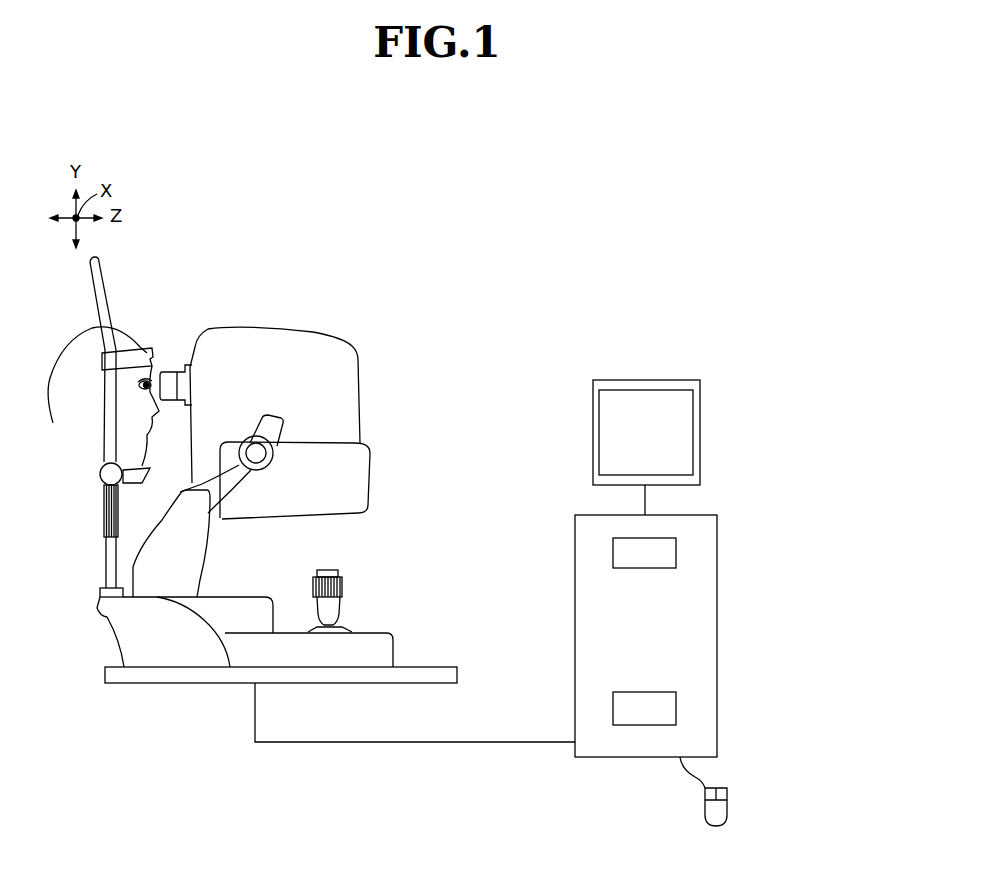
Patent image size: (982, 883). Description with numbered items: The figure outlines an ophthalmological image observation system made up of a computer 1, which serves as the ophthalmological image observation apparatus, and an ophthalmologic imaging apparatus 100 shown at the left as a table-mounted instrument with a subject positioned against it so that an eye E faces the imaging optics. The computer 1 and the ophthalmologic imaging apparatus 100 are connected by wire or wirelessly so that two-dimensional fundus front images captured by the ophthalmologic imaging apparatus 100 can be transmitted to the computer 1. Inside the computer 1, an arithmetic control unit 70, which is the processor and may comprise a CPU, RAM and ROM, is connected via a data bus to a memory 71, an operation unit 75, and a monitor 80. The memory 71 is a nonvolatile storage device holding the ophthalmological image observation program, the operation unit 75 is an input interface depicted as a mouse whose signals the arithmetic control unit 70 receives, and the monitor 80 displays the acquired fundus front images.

The computer 1 is at (578, 312).
The ophthalmologic imaging apparatus 100 is at (393, 328).
The subject eye E is at (154, 350).
The monitor 80 is at (700, 455).
The arithmetic control unit 70 is at (676, 553).
The memory 71 is at (676, 707).
The operation unit 75 is at (760, 810).